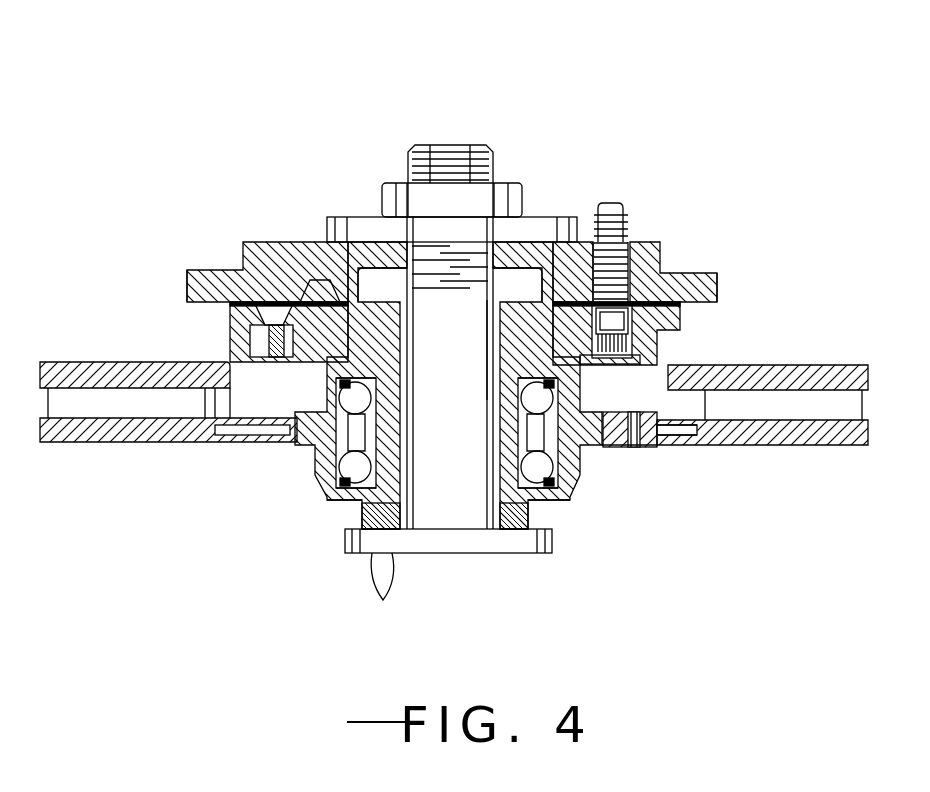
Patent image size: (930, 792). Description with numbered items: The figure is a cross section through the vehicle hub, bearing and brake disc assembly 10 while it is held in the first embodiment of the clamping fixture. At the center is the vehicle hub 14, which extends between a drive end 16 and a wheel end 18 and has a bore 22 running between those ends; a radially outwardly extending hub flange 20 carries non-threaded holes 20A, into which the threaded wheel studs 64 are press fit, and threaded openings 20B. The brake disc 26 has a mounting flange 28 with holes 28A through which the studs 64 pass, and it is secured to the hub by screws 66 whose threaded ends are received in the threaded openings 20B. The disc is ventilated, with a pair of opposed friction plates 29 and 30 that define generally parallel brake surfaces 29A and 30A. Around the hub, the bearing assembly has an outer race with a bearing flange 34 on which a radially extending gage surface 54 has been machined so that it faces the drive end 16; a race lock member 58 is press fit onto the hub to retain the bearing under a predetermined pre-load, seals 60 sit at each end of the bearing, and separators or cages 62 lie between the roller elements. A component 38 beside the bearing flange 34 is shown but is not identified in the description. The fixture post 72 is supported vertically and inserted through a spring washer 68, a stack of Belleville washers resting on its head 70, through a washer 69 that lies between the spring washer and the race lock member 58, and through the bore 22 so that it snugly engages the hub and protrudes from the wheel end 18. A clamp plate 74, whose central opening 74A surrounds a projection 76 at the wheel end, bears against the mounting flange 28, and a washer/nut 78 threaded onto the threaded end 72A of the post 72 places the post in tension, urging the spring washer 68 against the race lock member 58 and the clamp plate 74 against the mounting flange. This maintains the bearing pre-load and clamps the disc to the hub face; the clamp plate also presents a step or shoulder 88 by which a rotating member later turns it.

The vehicle hub, bearing and brake disc assembly 10 is at (272, 482).
The vehicle hub 14 is at (486, 346).
The drive end 16 is at (496, 536).
The wheel end 18 is at (392, 316).
The hub flange 20 is at (256, 372).
The non-threaded holes 20A is at (680, 350).
The threaded openings 20B is at (250, 336).
The bore 22 is at (485, 372).
The brake disc 26 is at (805, 372).
The mounting flange 28 is at (240, 322).
The holes 28A is at (660, 325).
The friction plate 29 is at (66, 444).
The brake surface 29A is at (160, 446).
The friction plate 30 is at (88, 375).
The plate web 30A is at (142, 444).
The bearing flange 34 is at (660, 450).
The spacer block 38 is at (630, 448).
The gage surface 54 is at (640, 455).
The race lock member 58 is at (345, 502).
The seals 60 is at (630, 360).
The separators or cages 62 is at (518, 432).
The threaded wheel studs 64 is at (640, 248).
The screws 66 is at (302, 262).
The spring washer 68 is at (388, 587).
The washer 69 is at (340, 520).
The head 70 is at (540, 556).
The fixture post 72 is at (488, 252).
The threaded end 72A is at (420, 160).
The clamp plate 74 is at (258, 250).
The central opening 74A is at (330, 280).
The projection 76 is at (545, 232).
The washer/nut 78 is at (505, 190).
The step or shoulder 88 is at (225, 280).